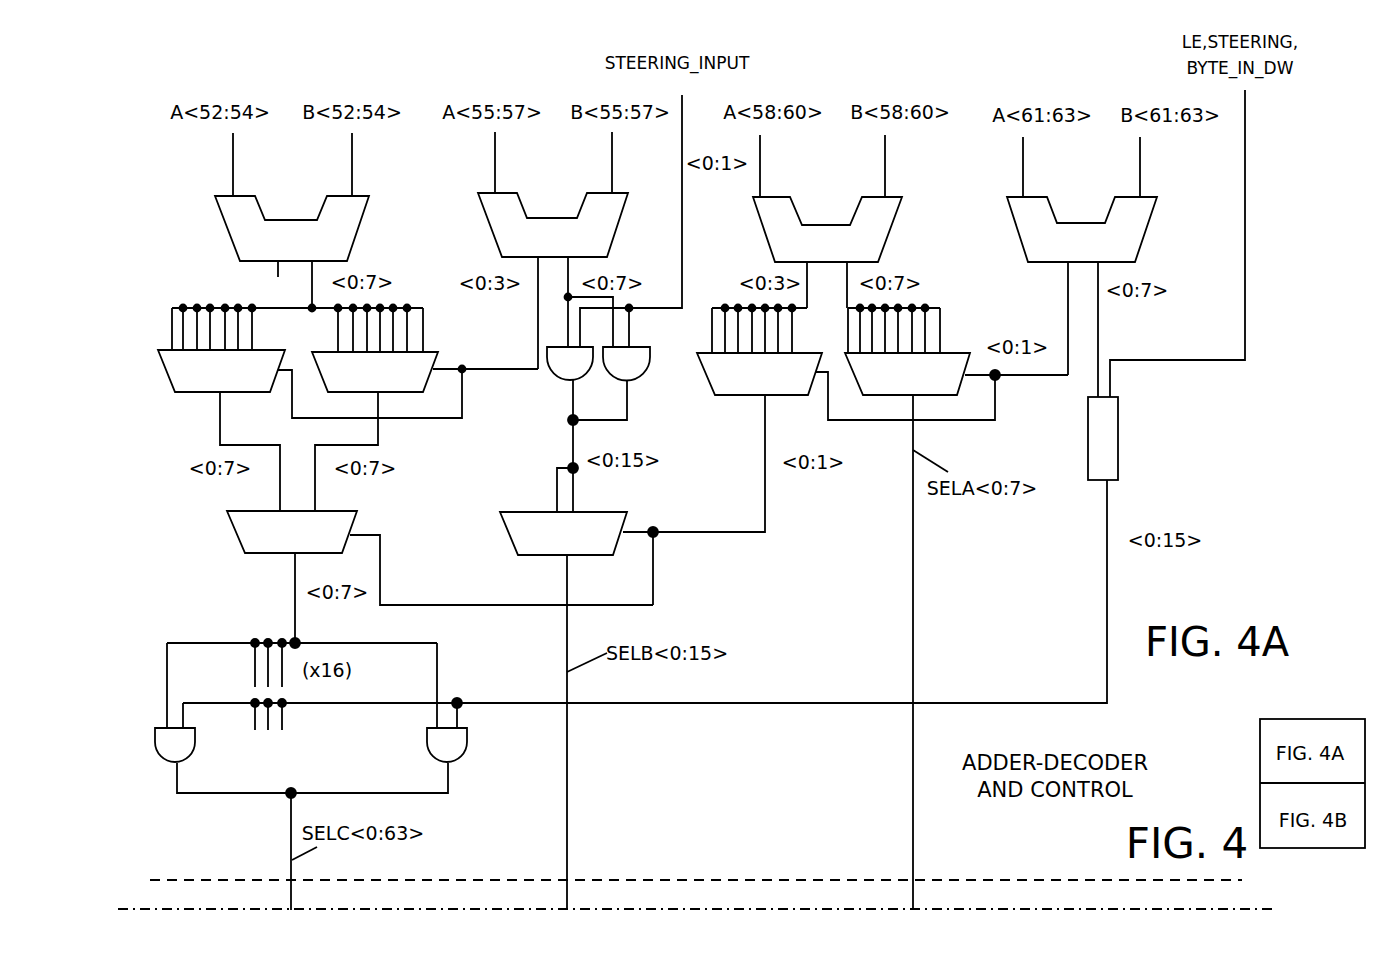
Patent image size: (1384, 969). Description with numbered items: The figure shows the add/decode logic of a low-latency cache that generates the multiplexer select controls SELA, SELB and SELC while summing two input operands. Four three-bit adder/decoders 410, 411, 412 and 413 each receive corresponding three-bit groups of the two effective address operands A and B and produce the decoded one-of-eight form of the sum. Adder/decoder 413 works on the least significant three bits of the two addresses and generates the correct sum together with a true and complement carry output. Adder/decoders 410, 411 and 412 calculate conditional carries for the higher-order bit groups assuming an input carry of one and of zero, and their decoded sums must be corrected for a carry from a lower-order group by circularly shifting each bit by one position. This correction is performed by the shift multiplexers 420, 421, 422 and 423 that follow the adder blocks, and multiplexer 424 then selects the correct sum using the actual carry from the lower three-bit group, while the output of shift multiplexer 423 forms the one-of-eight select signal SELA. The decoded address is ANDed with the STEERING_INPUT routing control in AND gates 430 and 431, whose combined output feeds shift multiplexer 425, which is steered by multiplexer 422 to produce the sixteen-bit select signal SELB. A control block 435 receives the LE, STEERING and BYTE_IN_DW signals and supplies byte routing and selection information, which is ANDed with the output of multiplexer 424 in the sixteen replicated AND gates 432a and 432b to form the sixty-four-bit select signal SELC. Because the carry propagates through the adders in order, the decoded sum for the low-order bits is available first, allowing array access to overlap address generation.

The adder/decoder 410 is at (225, 223).
The adder/decoder 411 is at (487, 222).
The adder/decoder 412 is at (762, 225).
The adder/decoder 413 is at (1015, 225).
The multiplexer 420 is at (193, 393).
The multiplexer 421 is at (432, 353).
The multiplexer 422 is at (730, 397).
The multiplexer 423 is at (953, 352).
The multiplexer 424 is at (258, 555).
The multiplexer 425 is at (522, 555).
The AND gate 430 is at (557, 380).
The AND gate 431 is at (640, 378).
The AND gate 432a is at (160, 762).
The AND gate 432b is at (465, 762).
The control block 435 is at (1117, 435).